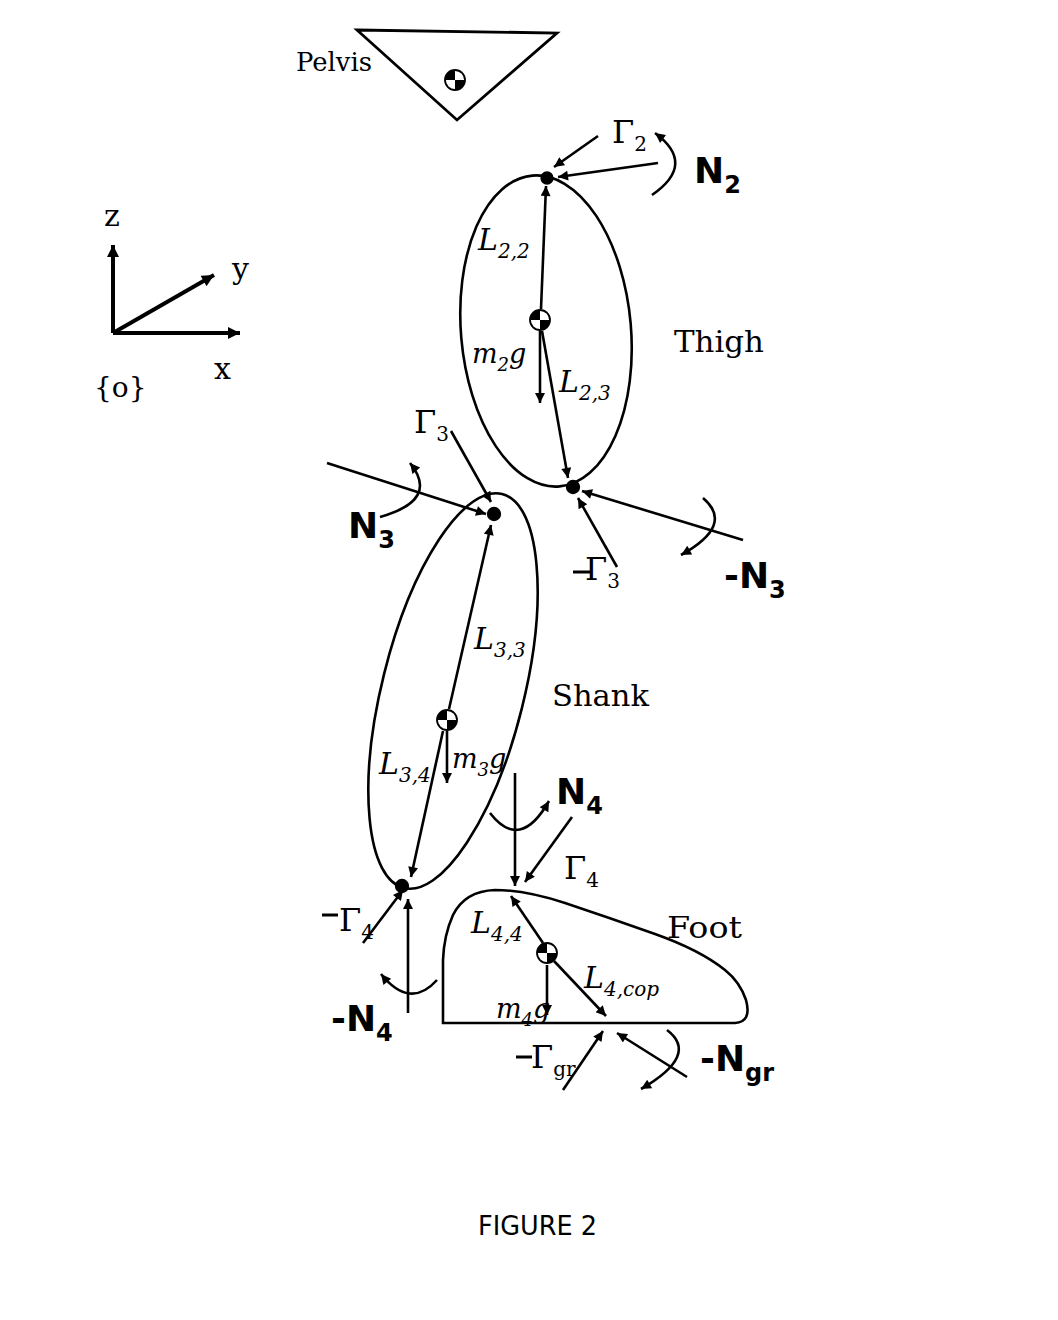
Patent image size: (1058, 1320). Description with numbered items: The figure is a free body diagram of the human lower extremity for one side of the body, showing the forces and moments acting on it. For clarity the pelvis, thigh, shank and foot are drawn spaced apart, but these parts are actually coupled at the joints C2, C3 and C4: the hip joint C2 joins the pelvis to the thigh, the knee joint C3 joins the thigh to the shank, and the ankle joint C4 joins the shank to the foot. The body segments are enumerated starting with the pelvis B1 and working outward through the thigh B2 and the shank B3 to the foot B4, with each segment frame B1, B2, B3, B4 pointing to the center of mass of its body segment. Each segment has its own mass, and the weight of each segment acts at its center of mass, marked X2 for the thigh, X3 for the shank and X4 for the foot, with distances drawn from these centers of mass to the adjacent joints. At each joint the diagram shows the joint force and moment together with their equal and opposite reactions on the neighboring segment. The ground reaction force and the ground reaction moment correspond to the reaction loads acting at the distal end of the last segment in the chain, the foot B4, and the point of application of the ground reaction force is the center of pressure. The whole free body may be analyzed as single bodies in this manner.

The pelvis body segment B1 is at (480, 65).
The hip joint C2 is at (536, 172).
The thigh center of mass X2 is at (515, 312).
The thigh body segment B2 is at (556, 311).
The knee joint C3 is at (607, 483).
The shank center of mass X3 is at (468, 707).
The shank body segment B3 is at (437, 713).
The ankle joint C4 is at (388, 882).
The foot center of mass X4 is at (531, 968).
The foot body segment B4 is at (557, 935).